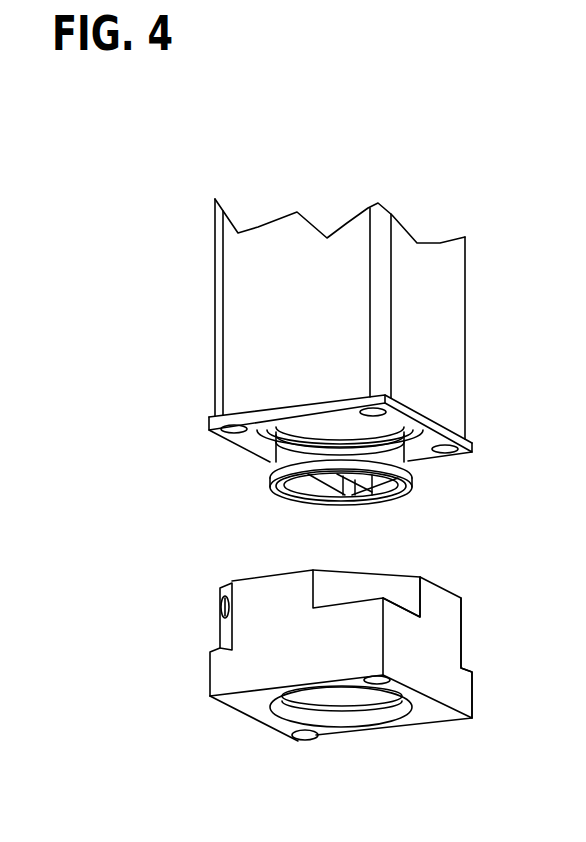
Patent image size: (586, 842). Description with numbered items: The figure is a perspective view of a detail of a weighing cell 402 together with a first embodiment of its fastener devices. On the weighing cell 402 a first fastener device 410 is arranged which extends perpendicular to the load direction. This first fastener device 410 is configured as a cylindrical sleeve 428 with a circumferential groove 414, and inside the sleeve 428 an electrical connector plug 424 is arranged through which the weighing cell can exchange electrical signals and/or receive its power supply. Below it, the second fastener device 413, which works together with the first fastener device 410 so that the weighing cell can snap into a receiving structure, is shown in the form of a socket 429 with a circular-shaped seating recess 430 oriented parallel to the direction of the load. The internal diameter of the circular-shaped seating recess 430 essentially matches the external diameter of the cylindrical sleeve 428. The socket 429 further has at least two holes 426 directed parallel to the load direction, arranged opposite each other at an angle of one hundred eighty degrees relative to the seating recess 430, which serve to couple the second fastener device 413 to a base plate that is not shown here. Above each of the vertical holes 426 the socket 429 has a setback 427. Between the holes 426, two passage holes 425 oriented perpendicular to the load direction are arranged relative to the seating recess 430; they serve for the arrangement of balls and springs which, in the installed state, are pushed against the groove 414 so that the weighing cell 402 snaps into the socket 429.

The weighing cell 402 is at (277, 323).
The first fastener device 410 is at (336, 484).
The second fastener device 413 is at (301, 688).
The circumferential groove 414 is at (263, 460).
The electrical connector plug 424 is at (392, 497).
The passage holes 425 is at (221, 605).
The holes 426 is at (312, 739).
The setback 427 is at (367, 588).
The cylindrical sleeve 428 is at (272, 487).
The socket 429 is at (445, 687).
The circular-shaped seating recess 430 is at (350, 697).